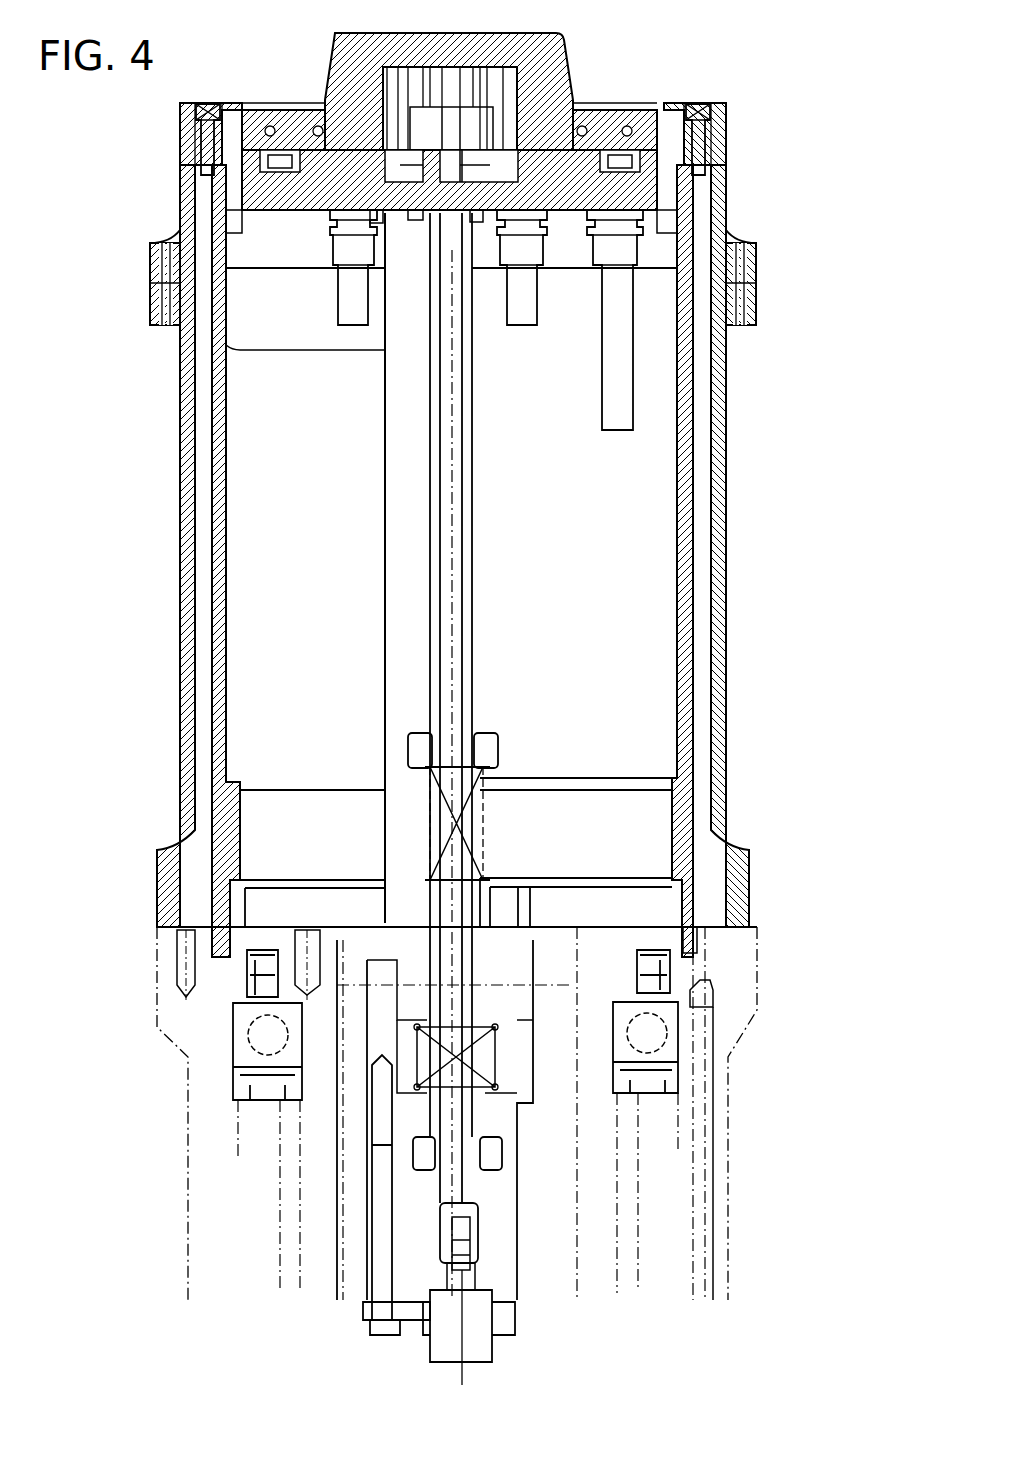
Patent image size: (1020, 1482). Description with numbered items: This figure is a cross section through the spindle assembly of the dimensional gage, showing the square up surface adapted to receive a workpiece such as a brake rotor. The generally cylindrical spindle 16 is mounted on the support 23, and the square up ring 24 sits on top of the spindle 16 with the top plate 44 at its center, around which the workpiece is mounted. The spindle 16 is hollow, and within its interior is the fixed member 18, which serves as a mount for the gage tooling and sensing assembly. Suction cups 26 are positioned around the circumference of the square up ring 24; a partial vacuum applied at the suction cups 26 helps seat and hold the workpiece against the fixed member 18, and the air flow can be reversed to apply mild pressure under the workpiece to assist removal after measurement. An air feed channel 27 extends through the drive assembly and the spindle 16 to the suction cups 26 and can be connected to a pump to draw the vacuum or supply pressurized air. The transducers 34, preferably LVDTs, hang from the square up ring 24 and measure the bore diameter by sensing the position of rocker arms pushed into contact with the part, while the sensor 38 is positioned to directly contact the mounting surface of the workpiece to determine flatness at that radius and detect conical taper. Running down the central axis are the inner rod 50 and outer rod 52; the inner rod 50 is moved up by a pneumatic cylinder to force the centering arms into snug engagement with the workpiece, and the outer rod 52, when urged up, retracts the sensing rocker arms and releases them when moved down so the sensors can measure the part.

The spindle 16 is at (218, 668).
The fixed member 18 is at (397, 538).
The support 23 is at (172, 856).
The square up ring 24 is at (718, 222).
The suction cups 26 is at (210, 105).
The air feed channel 27 is at (200, 535).
The transducers 34 is at (347, 318).
The sensor 38 is at (620, 387).
The top plate 44 is at (545, 67).
The inner rod 50 is at (465, 568).
The outer rod 52 is at (468, 690).